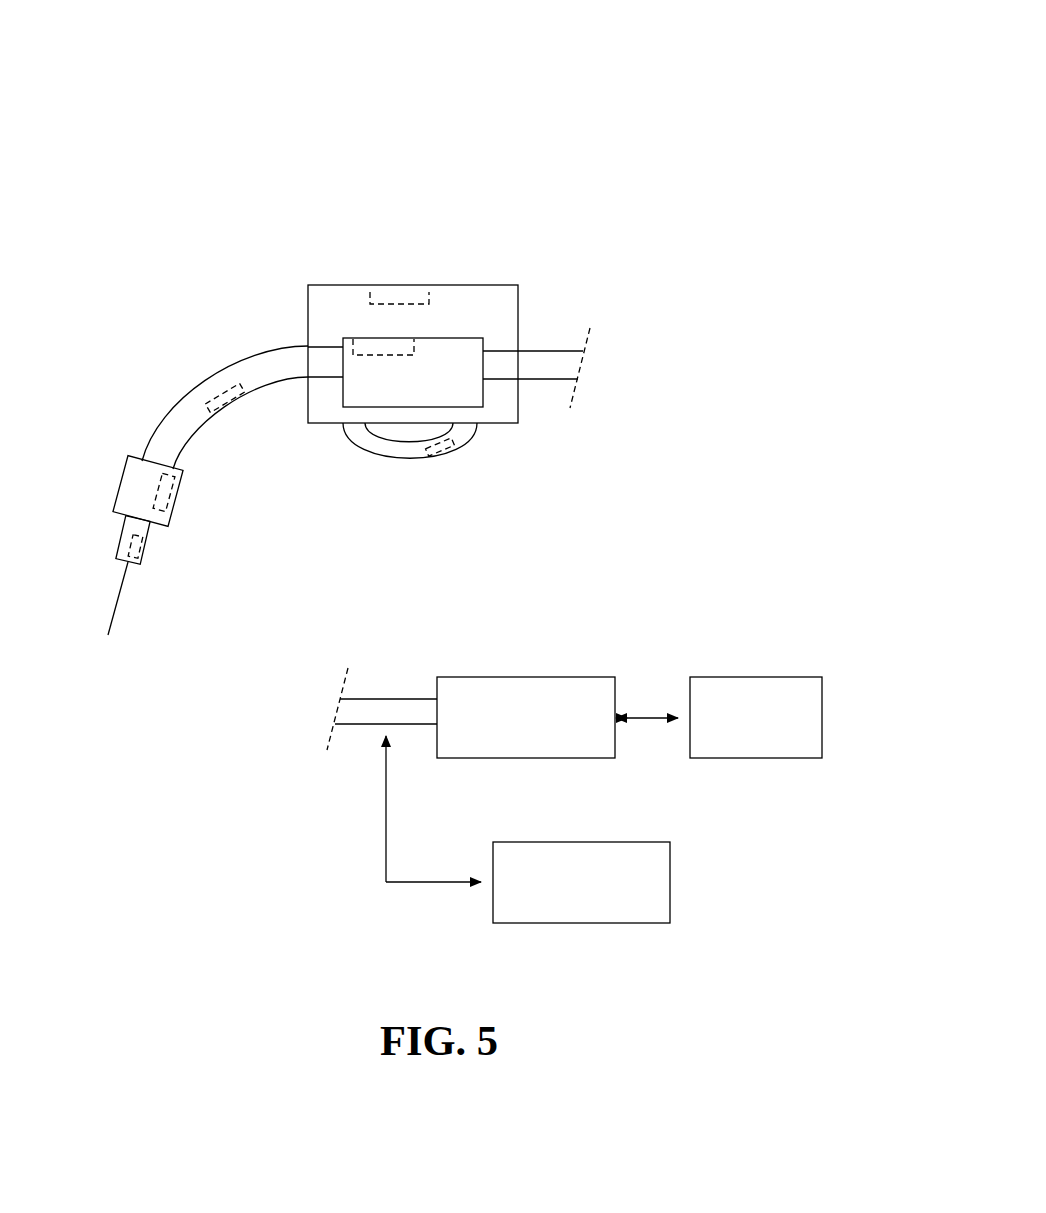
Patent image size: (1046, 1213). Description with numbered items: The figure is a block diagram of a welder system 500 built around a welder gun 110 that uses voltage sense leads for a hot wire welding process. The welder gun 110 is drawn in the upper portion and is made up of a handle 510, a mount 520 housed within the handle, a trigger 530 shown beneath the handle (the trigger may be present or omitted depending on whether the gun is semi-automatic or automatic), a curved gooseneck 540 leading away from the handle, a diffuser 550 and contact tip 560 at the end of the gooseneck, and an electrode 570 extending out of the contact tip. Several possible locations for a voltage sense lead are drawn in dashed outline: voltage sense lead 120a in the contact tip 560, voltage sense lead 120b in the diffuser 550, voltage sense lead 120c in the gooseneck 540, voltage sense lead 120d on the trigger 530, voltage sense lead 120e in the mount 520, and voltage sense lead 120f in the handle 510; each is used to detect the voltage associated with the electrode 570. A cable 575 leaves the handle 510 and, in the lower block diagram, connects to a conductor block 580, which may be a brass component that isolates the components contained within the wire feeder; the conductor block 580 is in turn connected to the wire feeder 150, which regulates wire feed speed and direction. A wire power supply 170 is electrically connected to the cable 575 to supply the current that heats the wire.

The welder system 500 is at (694, 66).
The welder gun 110 is at (178, 222).
The handle 510 is at (345, 284).
The mount 520 is at (457, 338).
The trigger 530 is at (397, 458).
The gooseneck 540 is at (210, 375).
The diffuser 550 is at (123, 473).
The contact tip 560 is at (122, 538).
The electrode 570 is at (118, 593).
The cable 575 is at (541, 351).
The conductor block 580 is at (558, 677).
The wire feeder 150 is at (790, 677).
The wire power supply 170 is at (610, 842).
The voltage sense lead 120a is at (140, 555).
The voltage sense lead 120b is at (175, 502).
The voltage sense lead 120c is at (223, 408).
The voltage sense lead 120d is at (447, 457).
The voltage sense lead 120e is at (397, 337).
The voltage sense lead 120f is at (398, 284).